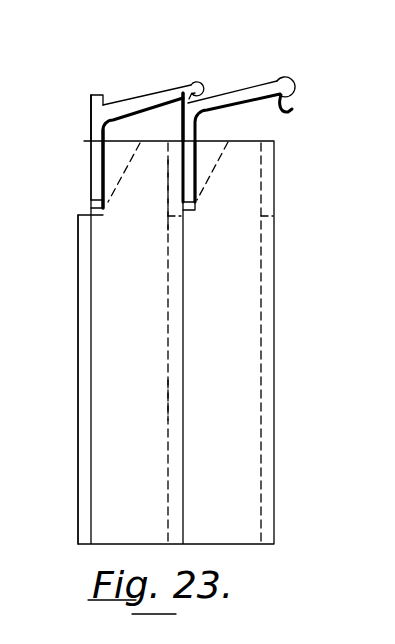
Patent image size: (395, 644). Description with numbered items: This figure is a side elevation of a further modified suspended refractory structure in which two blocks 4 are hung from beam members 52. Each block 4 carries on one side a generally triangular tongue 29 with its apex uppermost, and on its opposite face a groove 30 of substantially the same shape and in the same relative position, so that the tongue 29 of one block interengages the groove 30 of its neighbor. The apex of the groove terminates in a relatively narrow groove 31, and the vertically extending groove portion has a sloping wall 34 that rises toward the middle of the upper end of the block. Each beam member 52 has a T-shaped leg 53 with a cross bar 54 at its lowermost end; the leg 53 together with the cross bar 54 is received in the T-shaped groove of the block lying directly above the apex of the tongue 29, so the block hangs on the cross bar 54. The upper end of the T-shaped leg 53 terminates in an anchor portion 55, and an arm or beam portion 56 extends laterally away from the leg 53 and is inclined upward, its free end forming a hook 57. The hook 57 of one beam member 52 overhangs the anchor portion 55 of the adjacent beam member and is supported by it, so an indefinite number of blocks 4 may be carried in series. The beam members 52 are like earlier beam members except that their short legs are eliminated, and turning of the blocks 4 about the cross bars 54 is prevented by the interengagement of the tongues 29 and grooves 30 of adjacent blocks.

The block 4 is at (139, 362).
The tongue 29 is at (79, 331).
The groove 30 is at (170, 488).
The narrow groove 31 is at (166, 196).
The sloping wall 34 is at (123, 174).
The beam member 52 is at (123, 104).
The T-shaped leg 53 is at (97, 178).
The cross bar 54 is at (91, 206).
The anchor portion 55 is at (94, 116).
The arm or beam portion 56 is at (164, 86).
The hook 57 is at (202, 89).